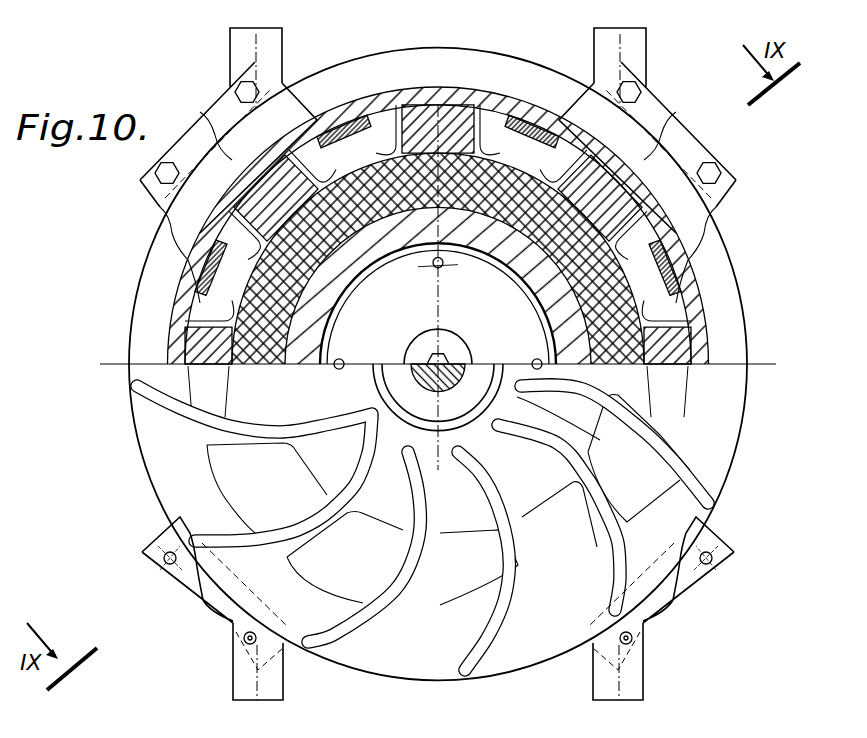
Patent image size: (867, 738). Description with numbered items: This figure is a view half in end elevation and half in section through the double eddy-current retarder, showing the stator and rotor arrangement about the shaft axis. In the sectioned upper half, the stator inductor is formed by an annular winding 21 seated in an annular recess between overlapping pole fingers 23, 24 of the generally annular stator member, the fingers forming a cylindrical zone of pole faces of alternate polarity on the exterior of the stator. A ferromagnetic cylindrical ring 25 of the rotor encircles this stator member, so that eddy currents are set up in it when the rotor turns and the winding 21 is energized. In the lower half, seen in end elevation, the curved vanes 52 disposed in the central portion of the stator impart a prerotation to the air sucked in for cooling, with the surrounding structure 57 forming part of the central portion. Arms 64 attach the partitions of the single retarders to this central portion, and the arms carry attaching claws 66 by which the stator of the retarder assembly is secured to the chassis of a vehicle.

The annular winding 21 is at (438, 258).
The pole finger 23 is at (283, 205).
The pole finger 24 is at (438, 234).
The cylindrical ring 25 is at (593, 205).
The vane 52 is at (272, 437).
The fan back plate 57 is at (468, 580).
The arm 64 is at (188, 140).
The attaching claw 66 is at (262, 46).